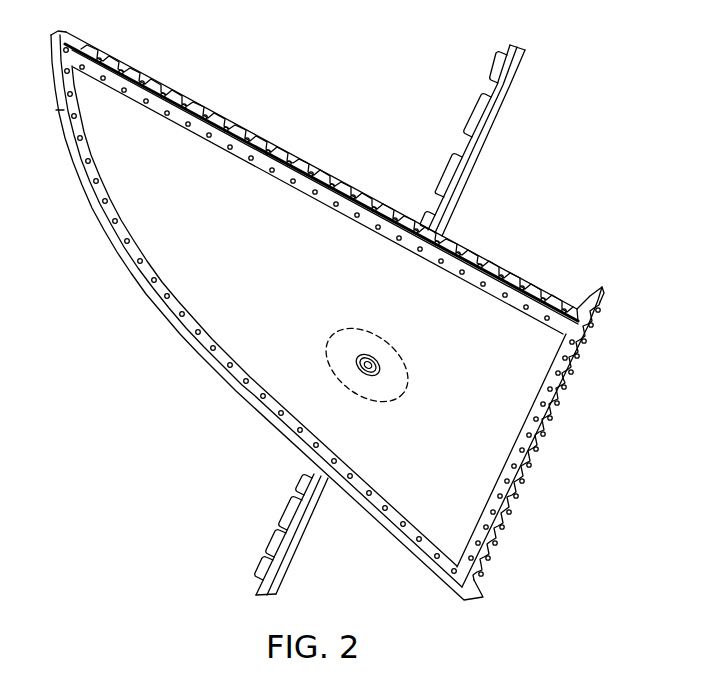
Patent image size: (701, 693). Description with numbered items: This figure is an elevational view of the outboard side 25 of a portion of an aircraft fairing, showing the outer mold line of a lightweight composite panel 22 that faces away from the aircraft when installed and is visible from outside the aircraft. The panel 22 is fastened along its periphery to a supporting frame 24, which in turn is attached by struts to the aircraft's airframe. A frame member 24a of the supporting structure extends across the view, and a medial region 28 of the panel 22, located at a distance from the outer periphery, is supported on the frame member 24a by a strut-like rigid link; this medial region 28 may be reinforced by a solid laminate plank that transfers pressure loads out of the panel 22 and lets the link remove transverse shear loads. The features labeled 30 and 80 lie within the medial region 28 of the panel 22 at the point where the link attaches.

The composite panel 22 is at (174, 238).
The supporting frame 24 is at (591, 288).
The frame member 24a is at (502, 91).
The outboard side 25 is at (494, 381).
The medial region 28 is at (348, 323).
The hub location 30 is at (328, 359).
The hub 80 is at (358, 370).